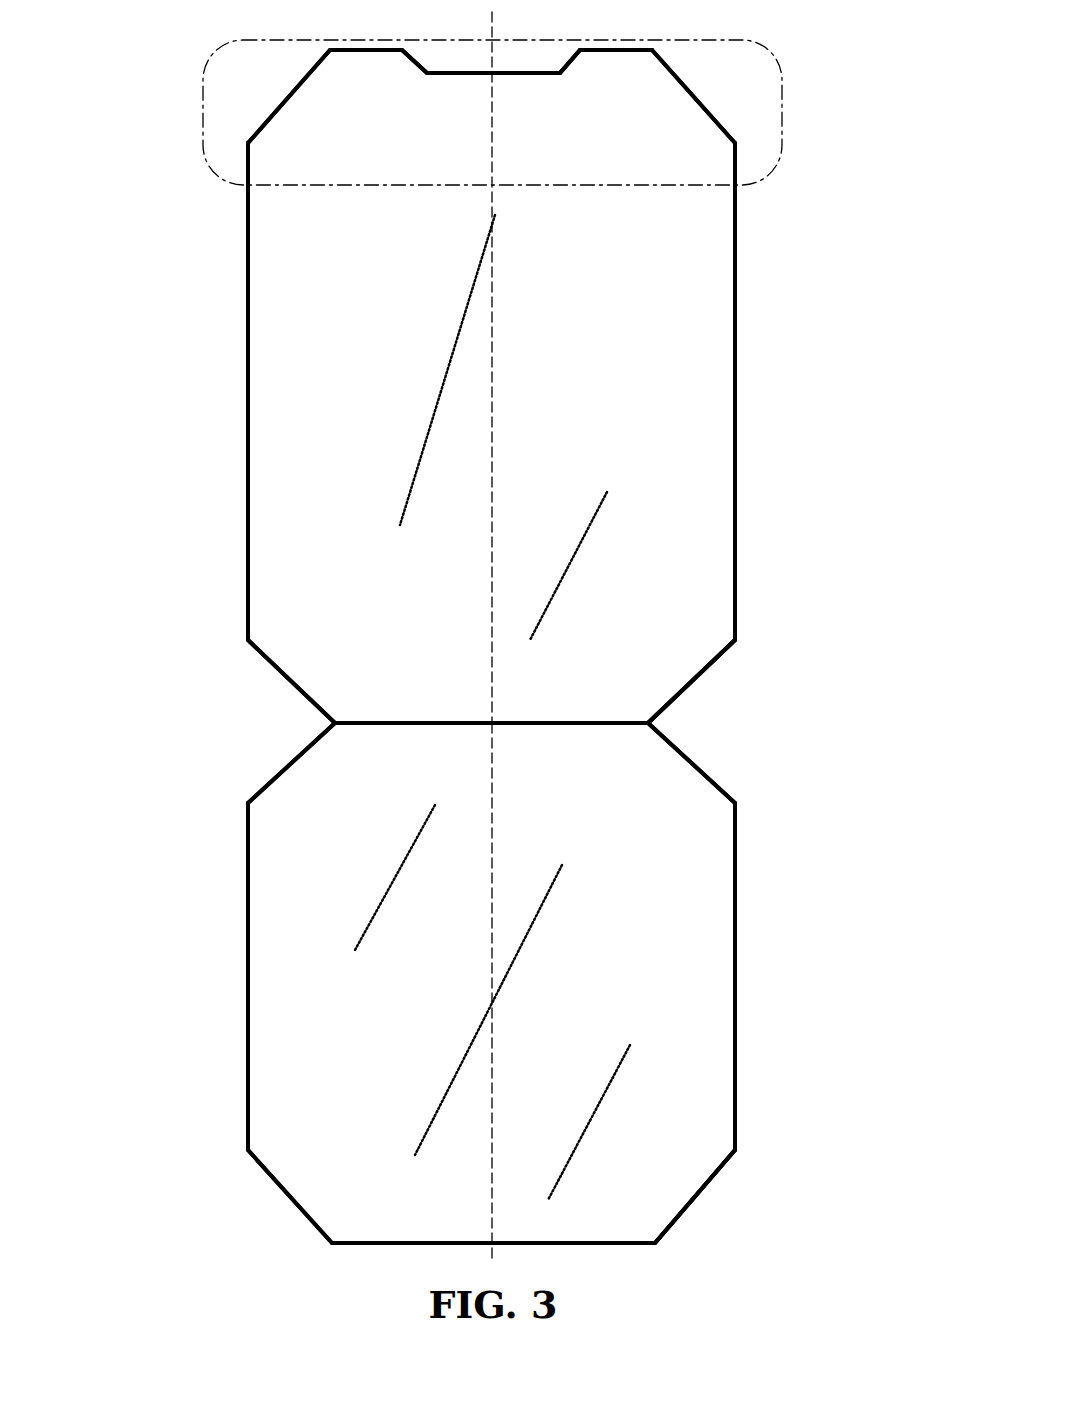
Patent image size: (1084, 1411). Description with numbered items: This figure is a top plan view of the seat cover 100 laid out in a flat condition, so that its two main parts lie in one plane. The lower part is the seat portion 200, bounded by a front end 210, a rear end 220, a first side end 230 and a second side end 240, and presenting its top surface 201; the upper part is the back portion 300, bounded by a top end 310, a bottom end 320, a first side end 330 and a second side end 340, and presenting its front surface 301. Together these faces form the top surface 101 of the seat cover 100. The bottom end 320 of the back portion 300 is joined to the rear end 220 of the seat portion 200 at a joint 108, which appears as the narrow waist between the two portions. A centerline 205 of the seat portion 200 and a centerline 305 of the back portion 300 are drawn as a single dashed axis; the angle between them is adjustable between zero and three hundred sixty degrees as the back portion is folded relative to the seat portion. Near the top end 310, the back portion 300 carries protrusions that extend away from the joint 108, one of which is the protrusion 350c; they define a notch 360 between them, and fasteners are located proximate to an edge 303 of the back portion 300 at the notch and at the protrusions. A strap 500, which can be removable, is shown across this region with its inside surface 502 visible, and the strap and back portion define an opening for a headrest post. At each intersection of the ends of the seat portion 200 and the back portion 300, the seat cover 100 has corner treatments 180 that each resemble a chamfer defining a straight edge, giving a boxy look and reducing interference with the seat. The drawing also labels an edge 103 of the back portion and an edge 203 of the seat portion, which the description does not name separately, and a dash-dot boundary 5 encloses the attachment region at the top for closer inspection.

The seat cover 100 is at (154, 1081).
The top surface 101 is at (632, 952).
The side edge 103 is at (248, 308).
The joint 108 is at (357, 758).
The corner treatments 180 is at (290, 103).
The seat portion 200 is at (717, 992).
The top surface 201 is at (409, 1002).
The lower right edge 203 is at (737, 1082).
The centerline 205 is at (492, 818).
The front end 210 is at (508, 1223).
The rear end 220 is at (515, 732).
The first side end 230 is at (718, 1020).
The second side end 240 is at (267, 972).
The back portion 300 is at (716, 400).
The front surface 301 is at (568, 306).
The edge 303 is at (735, 553).
The centerline 305 is at (492, 470).
The top end 310 is at (630, 50).
The bottom end 320 is at (518, 698).
The first side end 330 is at (717, 465).
The second side end 340 is at (265, 425).
The protrusion 350c is at (372, 50).
The notch 360 is at (513, 77).
The detail region of FIG. 5 is at (772, 172).
The strap 500 is at (548, 58).
The inside surface 502 is at (457, 56).